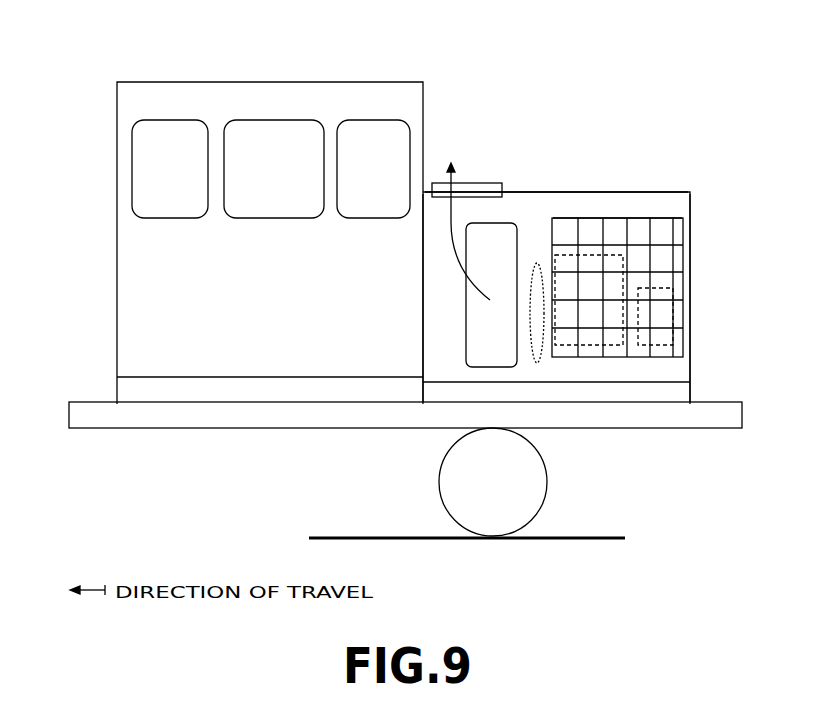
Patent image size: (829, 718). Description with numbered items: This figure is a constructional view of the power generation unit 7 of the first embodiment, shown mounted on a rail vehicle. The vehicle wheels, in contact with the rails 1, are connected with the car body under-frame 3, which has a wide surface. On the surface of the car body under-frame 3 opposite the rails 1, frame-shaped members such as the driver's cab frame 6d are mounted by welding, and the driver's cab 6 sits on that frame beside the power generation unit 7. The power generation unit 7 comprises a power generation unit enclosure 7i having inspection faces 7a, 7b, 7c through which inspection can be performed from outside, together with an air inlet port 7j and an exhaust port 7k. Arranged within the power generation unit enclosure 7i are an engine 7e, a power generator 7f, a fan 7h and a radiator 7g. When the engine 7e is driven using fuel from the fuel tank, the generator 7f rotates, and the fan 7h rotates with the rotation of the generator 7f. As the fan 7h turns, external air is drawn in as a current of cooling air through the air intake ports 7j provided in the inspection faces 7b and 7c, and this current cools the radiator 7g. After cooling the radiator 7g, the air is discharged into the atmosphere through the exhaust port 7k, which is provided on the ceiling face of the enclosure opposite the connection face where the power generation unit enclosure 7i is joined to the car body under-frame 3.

The rails 1 is at (397, 540).
The car body under-frame 3 is at (127, 428).
The cabin 6 is at (190, 82).
The driver's cab frame 6d is at (185, 377).
The power generation unit 7 is at (613, 105).
The inspection face 7a is at (692, 348).
The inspection face 7b is at (543, 205).
The inspection face 7c is at (457, 340).
The engine 7e is at (680, 292).
The power generator 7f is at (607, 337).
The radiator 7g is at (478, 305).
The fan 7h is at (535, 350).
The power generation unit enclosure 7i is at (635, 192).
The air inlet port 7j is at (658, 220).
The exhaust port 7k is at (470, 182).